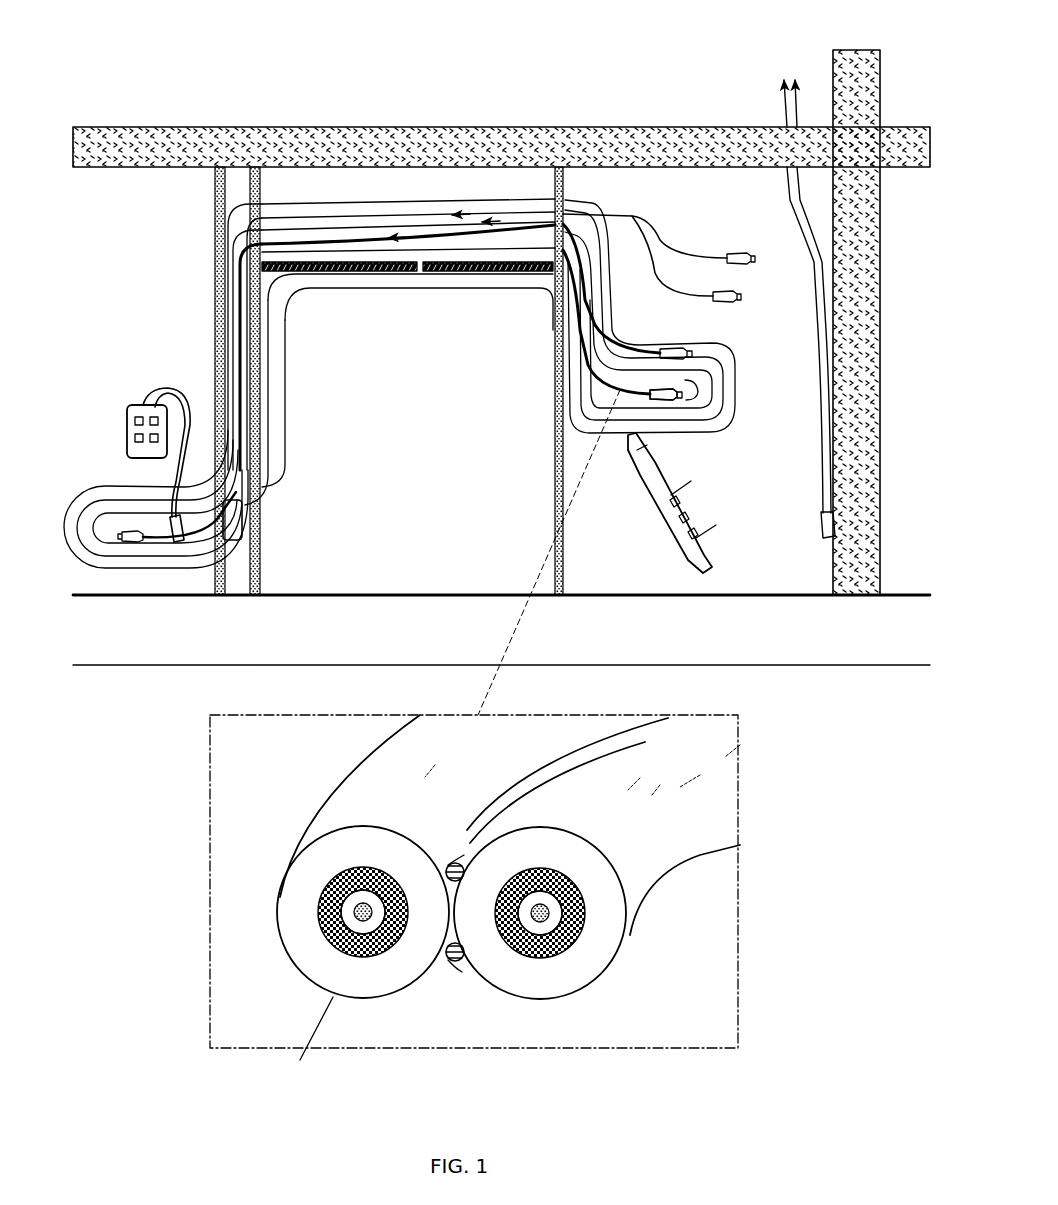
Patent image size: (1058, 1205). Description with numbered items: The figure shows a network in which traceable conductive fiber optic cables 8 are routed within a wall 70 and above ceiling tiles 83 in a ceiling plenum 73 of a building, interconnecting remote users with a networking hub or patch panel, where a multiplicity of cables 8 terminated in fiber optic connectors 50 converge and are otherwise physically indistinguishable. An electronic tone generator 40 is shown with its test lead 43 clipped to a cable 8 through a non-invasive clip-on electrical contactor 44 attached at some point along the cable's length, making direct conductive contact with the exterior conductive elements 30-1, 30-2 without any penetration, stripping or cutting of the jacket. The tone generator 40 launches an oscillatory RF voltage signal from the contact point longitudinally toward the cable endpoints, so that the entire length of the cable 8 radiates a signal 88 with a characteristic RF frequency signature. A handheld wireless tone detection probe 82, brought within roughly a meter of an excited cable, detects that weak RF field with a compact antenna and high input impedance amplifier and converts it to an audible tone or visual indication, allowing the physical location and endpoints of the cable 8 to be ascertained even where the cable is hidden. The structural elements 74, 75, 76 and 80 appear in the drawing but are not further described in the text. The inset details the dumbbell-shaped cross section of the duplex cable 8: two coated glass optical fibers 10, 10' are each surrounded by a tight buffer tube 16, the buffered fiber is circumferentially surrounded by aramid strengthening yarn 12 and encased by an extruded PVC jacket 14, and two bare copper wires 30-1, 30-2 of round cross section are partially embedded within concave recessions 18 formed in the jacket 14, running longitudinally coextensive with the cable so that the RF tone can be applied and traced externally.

The traceable fiber optic cable 8 is at (243, 375).
The optical fiber 10 is at (301, 863).
The second optical fiber 10' is at (601, 866).
The aramid strengthening yarn 12 is at (330, 940).
The jacket 14 is at (335, 1000).
The tight buffer tube 16 is at (345, 910).
The concave recessions 18 is at (473, 836).
The conductive element 30-1 is at (454, 881).
The second conductive element 30-2 is at (456, 962).
The tone generator 40 is at (140, 400).
The test lead 43 is at (178, 395).
The clip-on electrical contactor 44 is at (168, 530).
The fiber optic connector 50 is at (690, 389).
The wall 70 is at (250, 201).
The ceiling plenum 73 is at (382, 200).
The floor 74 is at (476, 636).
The ceiling slab 75 is at (521, 161).
The room 76 is at (721, 224).
The wall outlet box 80 is at (243, 530).
The wireless tone detection probe 82 is at (705, 513).
The ceiling tiles 83 is at (447, 272).
The signal 88 is at (532, 288).